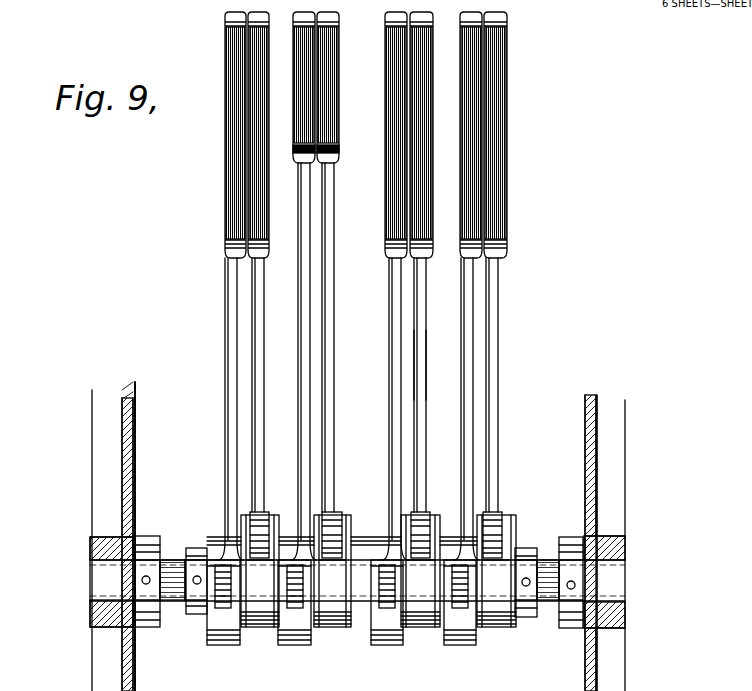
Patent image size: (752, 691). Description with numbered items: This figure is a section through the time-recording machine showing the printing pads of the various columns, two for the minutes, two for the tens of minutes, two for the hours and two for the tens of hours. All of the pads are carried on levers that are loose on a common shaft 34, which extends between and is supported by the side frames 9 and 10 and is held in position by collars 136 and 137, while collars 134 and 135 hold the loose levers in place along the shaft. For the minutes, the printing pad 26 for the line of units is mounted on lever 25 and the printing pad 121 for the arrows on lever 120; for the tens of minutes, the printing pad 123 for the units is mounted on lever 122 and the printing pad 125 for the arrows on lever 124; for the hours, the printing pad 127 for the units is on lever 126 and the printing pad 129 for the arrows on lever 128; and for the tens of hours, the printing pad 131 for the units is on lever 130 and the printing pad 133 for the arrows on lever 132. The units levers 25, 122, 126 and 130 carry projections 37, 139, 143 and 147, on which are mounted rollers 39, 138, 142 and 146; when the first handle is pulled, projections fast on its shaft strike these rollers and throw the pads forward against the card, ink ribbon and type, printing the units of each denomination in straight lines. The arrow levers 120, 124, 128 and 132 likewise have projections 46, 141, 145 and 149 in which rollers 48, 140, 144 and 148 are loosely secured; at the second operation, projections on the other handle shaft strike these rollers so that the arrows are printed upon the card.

The side frame 9 is at (620, 462).
The side frame 10 is at (92, 440).
The lever 25 is at (222, 16).
The printing pad 26 is at (233, 106).
The shaft 34 is at (95, 577).
The projection 37 is at (228, 632).
The roller 39 is at (215, 605).
The projection 46 is at (260, 571).
The roller 48 is at (262, 510).
The lever 120 is at (255, 336).
The printing pad 121 is at (259, 235).
The lever 122 is at (300, 246).
The printing pad 123 is at (304, 58).
The lever 124 is at (332, 302).
The printing pad 125 is at (333, 137).
The lever 126 is at (392, 320).
The printing pad 127 is at (393, 180).
The lever 128 is at (420, 352).
The printing pad 129 is at (445, 123).
The lever 130 is at (468, 282).
The printing pad 131 is at (470, 57).
The lever 132 is at (510, 325).
The printing pad 133 is at (518, 192).
The collar 134 is at (197, 545).
The collar 135 is at (527, 545).
The collar 136 is at (137, 535).
The collar 137 is at (568, 538).
The roller 138 is at (292, 588).
The projection 139 is at (300, 634).
The roller 140 is at (340, 518).
The projection 141 is at (332, 571).
The roller 142 is at (375, 620).
The projection 143 is at (393, 636).
The roller 144 is at (424, 512).
The projection 145 is at (422, 571).
The roller 146 is at (459, 588).
The projection 147 is at (463, 636).
The roller 148 is at (498, 512).
The projection 149 is at (497, 571).